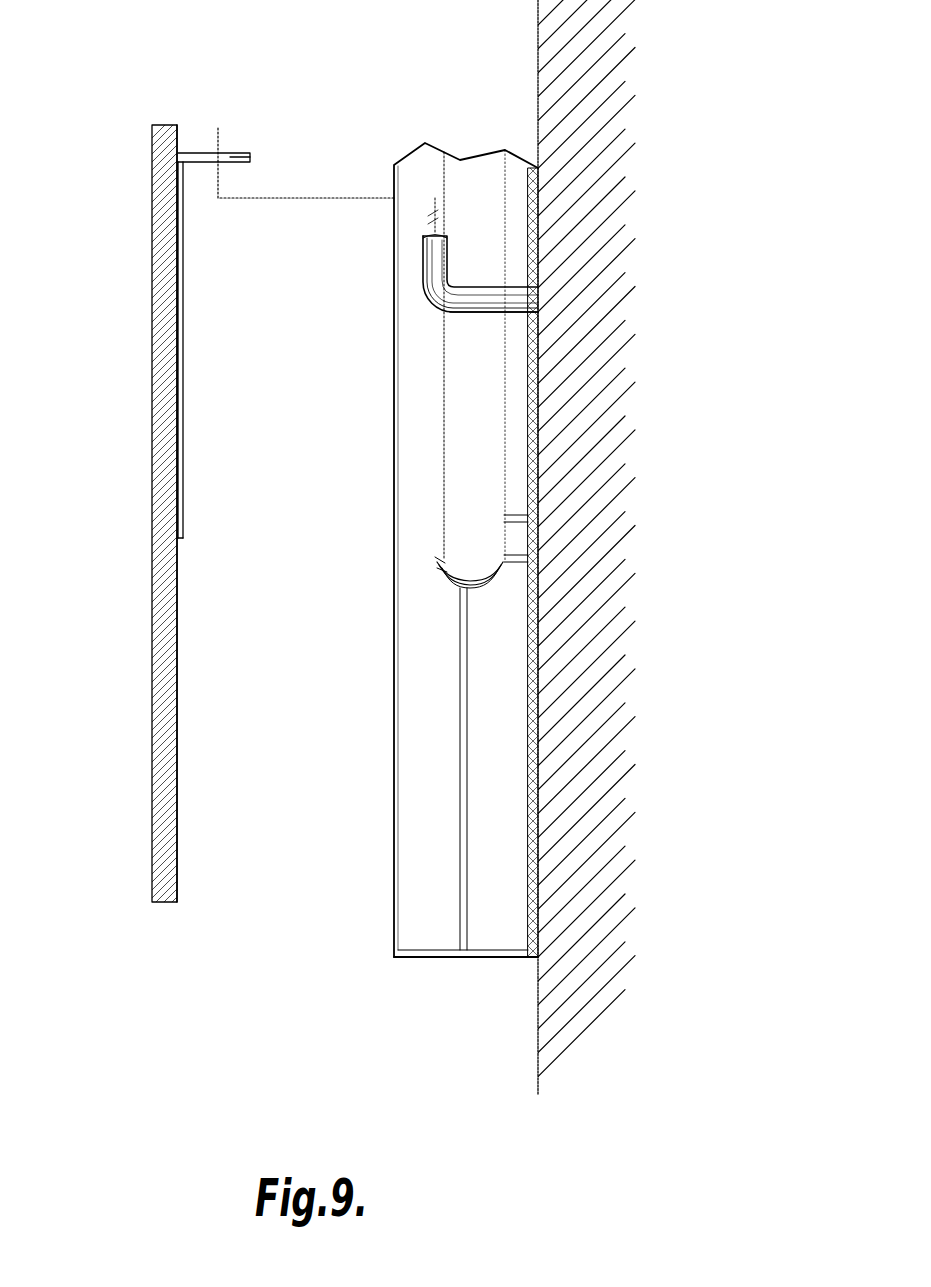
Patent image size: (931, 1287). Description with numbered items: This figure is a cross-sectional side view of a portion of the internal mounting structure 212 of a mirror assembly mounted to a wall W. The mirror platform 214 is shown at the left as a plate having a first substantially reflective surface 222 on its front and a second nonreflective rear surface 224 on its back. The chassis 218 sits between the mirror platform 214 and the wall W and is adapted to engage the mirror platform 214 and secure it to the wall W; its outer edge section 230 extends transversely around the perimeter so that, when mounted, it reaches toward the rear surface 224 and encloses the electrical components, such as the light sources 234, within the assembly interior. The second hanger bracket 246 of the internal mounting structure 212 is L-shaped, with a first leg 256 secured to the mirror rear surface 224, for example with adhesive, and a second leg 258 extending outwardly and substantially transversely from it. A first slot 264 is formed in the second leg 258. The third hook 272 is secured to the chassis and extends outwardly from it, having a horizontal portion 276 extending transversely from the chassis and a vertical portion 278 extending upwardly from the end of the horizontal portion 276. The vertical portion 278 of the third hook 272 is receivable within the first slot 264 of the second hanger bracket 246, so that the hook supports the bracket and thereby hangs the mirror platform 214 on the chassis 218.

The wall W is at (615, 64).
The internal mounting structure 212 is at (348, 130).
The mirror platform 214 is at (224, 522).
The chassis 218 is at (434, 586).
The first substantially reflective surface 222 is at (152, 640).
The second nonreflective rear surface 224 is at (178, 705).
The outer edge section 230 is at (462, 960).
The light sources 234 is at (455, 590).
The second hanger bracket 246 is at (213, 130).
The first leg 256 is at (183, 320).
The second leg 258 is at (196, 153).
The first slot 264 is at (228, 155).
The third hook 272 is at (480, 262).
The horizontal portion 276 is at (483, 313).
The vertical portion 278 is at (427, 250).